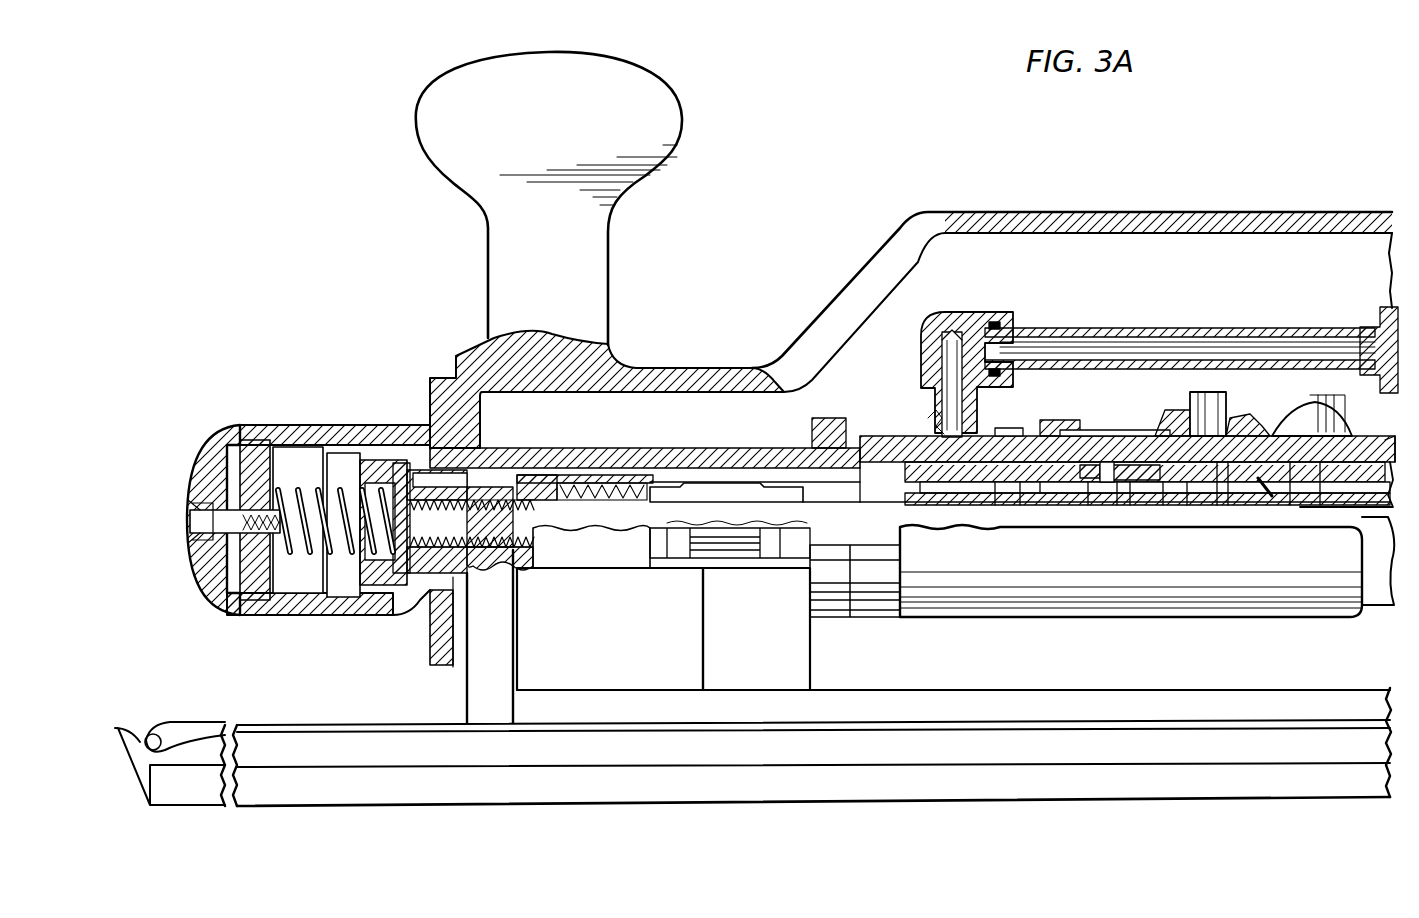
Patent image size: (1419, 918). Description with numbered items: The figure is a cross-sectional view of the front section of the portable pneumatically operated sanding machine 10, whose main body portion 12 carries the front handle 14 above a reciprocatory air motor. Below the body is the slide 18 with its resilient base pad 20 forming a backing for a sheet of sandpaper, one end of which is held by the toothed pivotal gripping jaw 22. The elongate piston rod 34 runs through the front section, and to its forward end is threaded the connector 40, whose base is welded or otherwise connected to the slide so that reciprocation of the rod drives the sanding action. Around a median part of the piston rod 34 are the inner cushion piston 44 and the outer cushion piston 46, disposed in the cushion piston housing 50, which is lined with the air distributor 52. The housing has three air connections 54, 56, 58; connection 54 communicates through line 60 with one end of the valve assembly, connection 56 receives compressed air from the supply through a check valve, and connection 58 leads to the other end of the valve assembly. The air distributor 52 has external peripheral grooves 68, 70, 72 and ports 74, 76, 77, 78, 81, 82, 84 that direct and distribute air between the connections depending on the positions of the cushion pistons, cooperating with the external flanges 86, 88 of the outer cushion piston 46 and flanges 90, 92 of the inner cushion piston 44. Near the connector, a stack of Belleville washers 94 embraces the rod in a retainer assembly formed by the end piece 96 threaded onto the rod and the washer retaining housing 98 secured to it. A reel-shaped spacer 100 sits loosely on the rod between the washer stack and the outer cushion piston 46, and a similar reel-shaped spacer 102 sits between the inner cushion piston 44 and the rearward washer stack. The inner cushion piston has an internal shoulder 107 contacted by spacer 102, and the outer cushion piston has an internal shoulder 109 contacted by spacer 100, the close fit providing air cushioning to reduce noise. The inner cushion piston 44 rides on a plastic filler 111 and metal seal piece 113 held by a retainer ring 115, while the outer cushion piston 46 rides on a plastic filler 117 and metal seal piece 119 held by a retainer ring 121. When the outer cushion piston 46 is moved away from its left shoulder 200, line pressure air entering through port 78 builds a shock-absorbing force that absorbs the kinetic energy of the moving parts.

The portable pneumatically operated sanding machine 10 is at (830, 246).
The main body portion 12 is at (987, 218).
The front handle 14 is at (440, 119).
The slide 18 is at (290, 748).
The base pad 20 is at (285, 783).
The toothed pivotal gripping jaw 22 is at (158, 722).
The piston rod 34 is at (832, 517).
The connector 40 is at (497, 627).
The inner cushion piston 44 is at (1228, 483).
The outer cushion piston 46 is at (963, 483).
The cushion piston housing 50 is at (1093, 453).
The air distributor 52 is at (1008, 447).
The air connection 54 is at (952, 383).
The air connection 56 is at (1183, 398).
The air connection 58 is at (1332, 397).
The line 60 is at (1135, 347).
The external peripheral groove 68 is at (930, 428).
The external peripheral groove 70 is at (1128, 447).
The external peripheral groove 72 is at (1267, 423).
The port 74 is at (943, 483).
The port 76 is at (1053, 453).
The port 77 is at (1087, 457).
The port 78 is at (1187, 487).
The port 81 is at (1208, 414).
The port 82 is at (1320, 493).
The port 84 is at (1375, 430).
The external flange 86 is at (920, 480).
The external flange 88 is at (1105, 485).
The external flange 90 is at (1130, 487).
The external flange 92 is at (1267, 483).
The Belleville washer stack 94 is at (585, 506).
The end piece 96 is at (513, 460).
The washer retaining housing 98 is at (575, 478).
The reel-shaped spacer 100 is at (731, 495).
The reel-shaped spacer 102 is at (1353, 502).
The internal shoulder 107 is at (1290, 487).
The internal shoulder 109 is at (1000, 503).
The plastic filler 111 is at (1217, 483).
The metal seal piece 113 is at (1163, 500).
The retainer ring 115 is at (1117, 500).
The plastic filler 117 is at (1022, 500).
The metal seal piece 119 is at (1040, 487).
The retainer ring 121 is at (1088, 488).
The left shoulder 200 is at (882, 457).